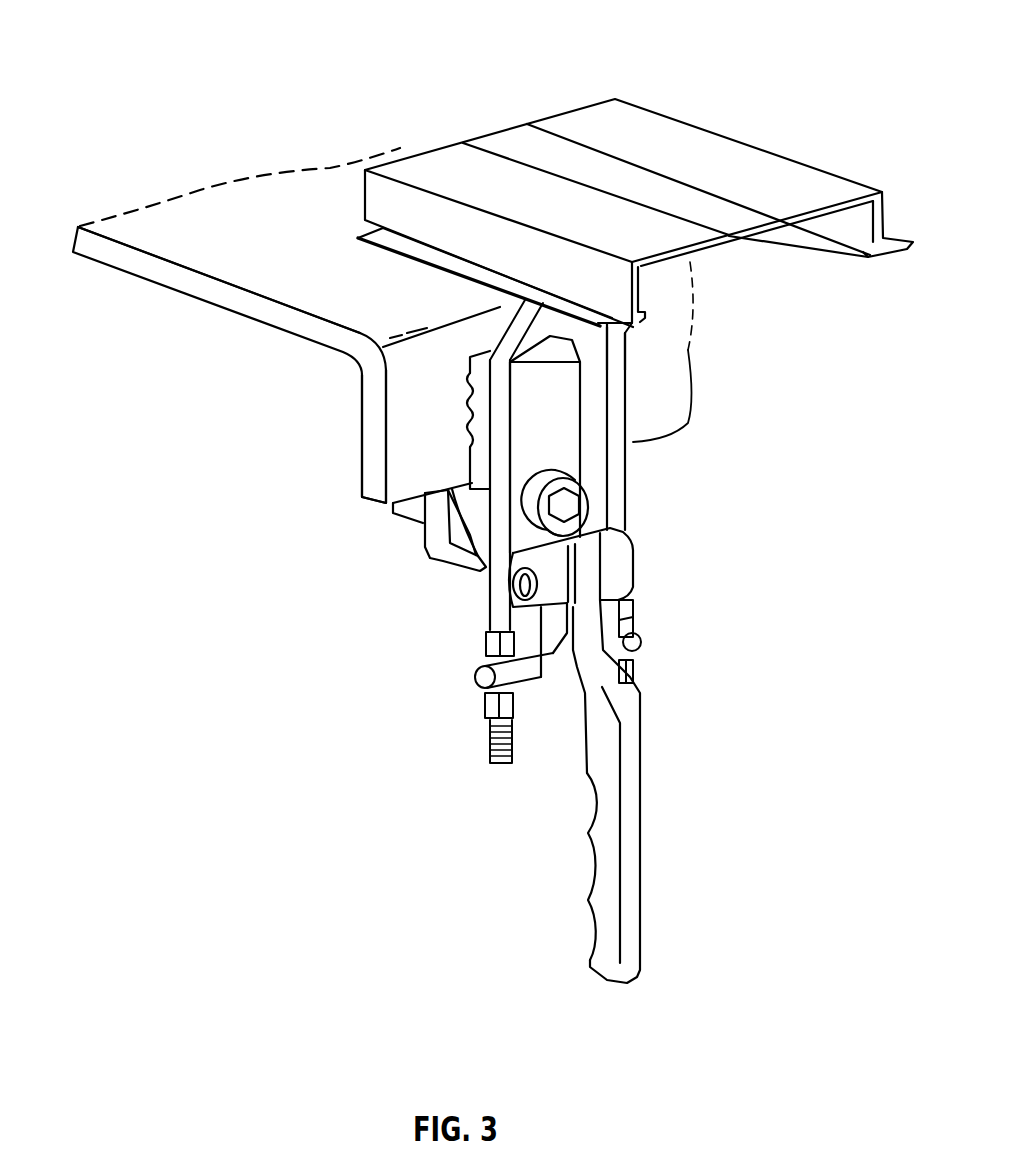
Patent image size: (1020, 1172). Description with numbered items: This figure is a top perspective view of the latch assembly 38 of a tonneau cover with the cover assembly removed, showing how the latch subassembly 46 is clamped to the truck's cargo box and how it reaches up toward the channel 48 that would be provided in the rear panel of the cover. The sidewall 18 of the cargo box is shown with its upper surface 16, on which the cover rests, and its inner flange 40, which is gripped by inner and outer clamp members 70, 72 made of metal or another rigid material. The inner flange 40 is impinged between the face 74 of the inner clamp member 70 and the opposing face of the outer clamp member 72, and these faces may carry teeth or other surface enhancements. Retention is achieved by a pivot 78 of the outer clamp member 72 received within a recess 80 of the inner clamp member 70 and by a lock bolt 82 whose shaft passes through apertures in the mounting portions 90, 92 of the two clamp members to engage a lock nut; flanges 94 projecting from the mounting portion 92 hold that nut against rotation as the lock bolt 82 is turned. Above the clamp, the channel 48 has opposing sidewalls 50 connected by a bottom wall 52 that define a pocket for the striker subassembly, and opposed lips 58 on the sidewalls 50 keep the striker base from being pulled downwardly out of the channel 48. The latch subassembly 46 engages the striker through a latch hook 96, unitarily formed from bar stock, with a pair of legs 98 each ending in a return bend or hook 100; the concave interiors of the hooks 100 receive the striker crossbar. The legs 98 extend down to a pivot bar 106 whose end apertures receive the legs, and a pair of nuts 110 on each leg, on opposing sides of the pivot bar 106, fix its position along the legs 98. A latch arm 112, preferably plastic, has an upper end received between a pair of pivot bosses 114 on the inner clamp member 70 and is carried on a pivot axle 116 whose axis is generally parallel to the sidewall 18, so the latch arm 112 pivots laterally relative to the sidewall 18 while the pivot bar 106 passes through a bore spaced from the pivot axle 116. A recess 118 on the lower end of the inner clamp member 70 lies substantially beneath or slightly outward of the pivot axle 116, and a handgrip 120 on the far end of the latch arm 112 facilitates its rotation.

The upper surface 16 is at (173, 223).
The sidewall 18 is at (100, 265).
The latch assembly 38 is at (517, 628).
The inner flange 40 is at (358, 410).
The latch subassembly 46 is at (527, 659).
The channel 48 is at (636, 178).
The sidewalls 50 is at (886, 208).
The bottom wall 52 is at (707, 153).
The lips 58 is at (847, 247).
The inner clamp member 70 is at (656, 632).
The outer clamp member 72 is at (420, 548).
The face 74 is at (612, 397).
The pivot 78 is at (504, 587).
The recess 80 is at (462, 553).
The lock bolt 82 is at (592, 498).
The mounting portion 90 is at (566, 393).
The mounting portion 92 is at (413, 539).
The flanges 94 is at (394, 452).
The latch hook 96 is at (628, 373).
The legs 98 is at (470, 440).
The hooks 100 is at (545, 303).
The pivot bar 106 is at (609, 631).
The nuts 110 is at (487, 643).
The latch arm 112 is at (609, 791).
The pivot bosses 114 is at (556, 602).
The pivot axle 116 is at (512, 587).
The recess 118 is at (517, 667).
The handgrip 120 is at (587, 900).